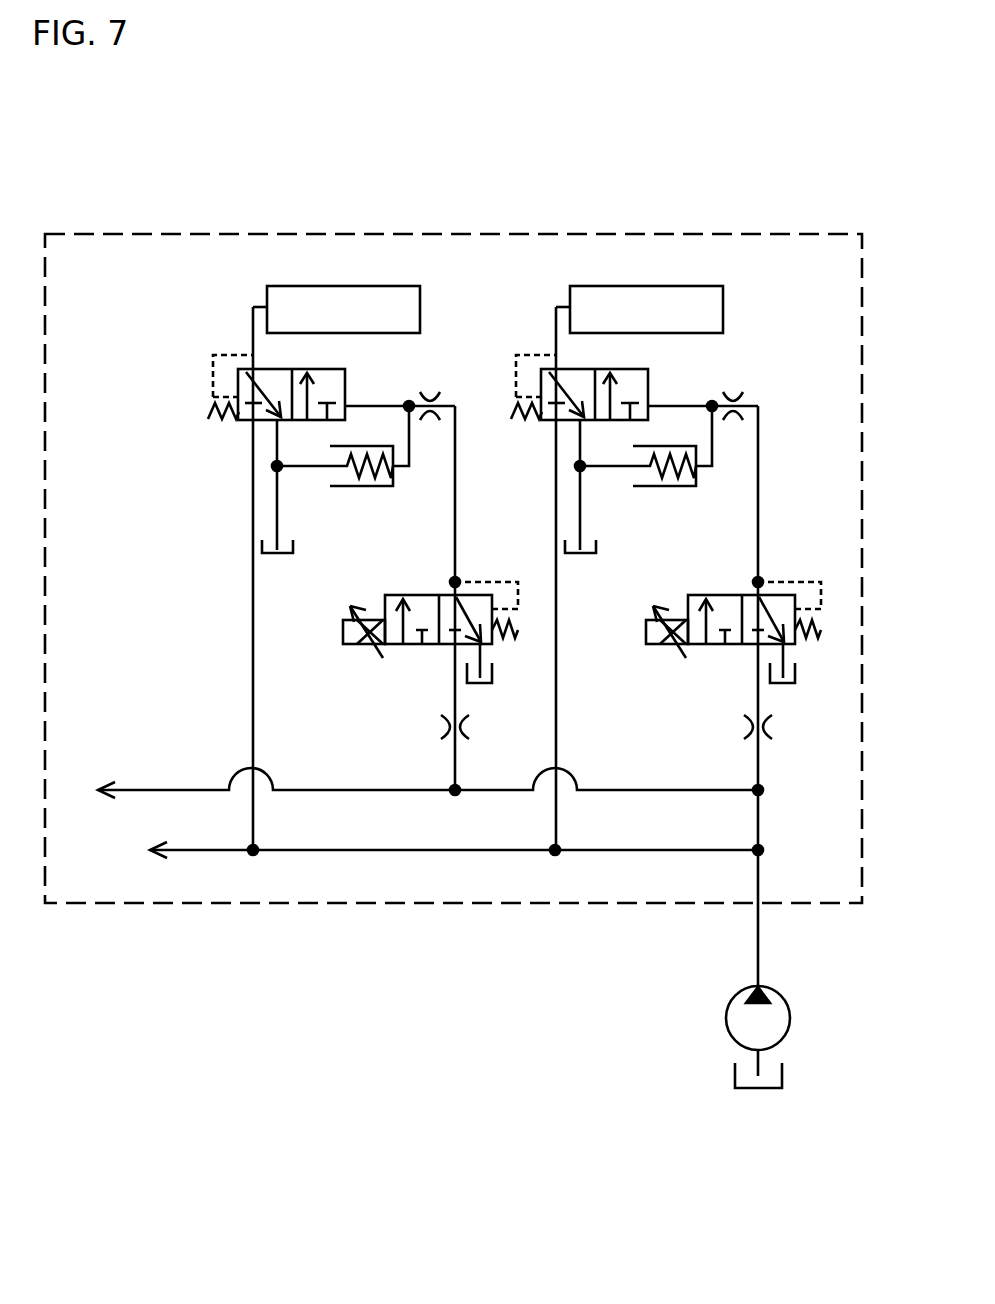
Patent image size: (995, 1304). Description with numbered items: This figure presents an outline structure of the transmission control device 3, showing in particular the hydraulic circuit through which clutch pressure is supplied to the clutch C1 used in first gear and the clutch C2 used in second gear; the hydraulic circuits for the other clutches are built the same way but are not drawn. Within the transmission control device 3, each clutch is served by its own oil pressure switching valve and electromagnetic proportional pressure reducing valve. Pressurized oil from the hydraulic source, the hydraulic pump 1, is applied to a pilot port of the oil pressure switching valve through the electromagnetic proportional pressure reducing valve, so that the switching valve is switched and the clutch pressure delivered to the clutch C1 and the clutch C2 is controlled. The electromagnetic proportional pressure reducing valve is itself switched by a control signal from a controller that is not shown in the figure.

The hydraulic pump 1 is at (785, 1005).
The transmission control device 3 is at (802, 232).
The clutch C1 is at (654, 243).
The clutch C2 is at (355, 287).